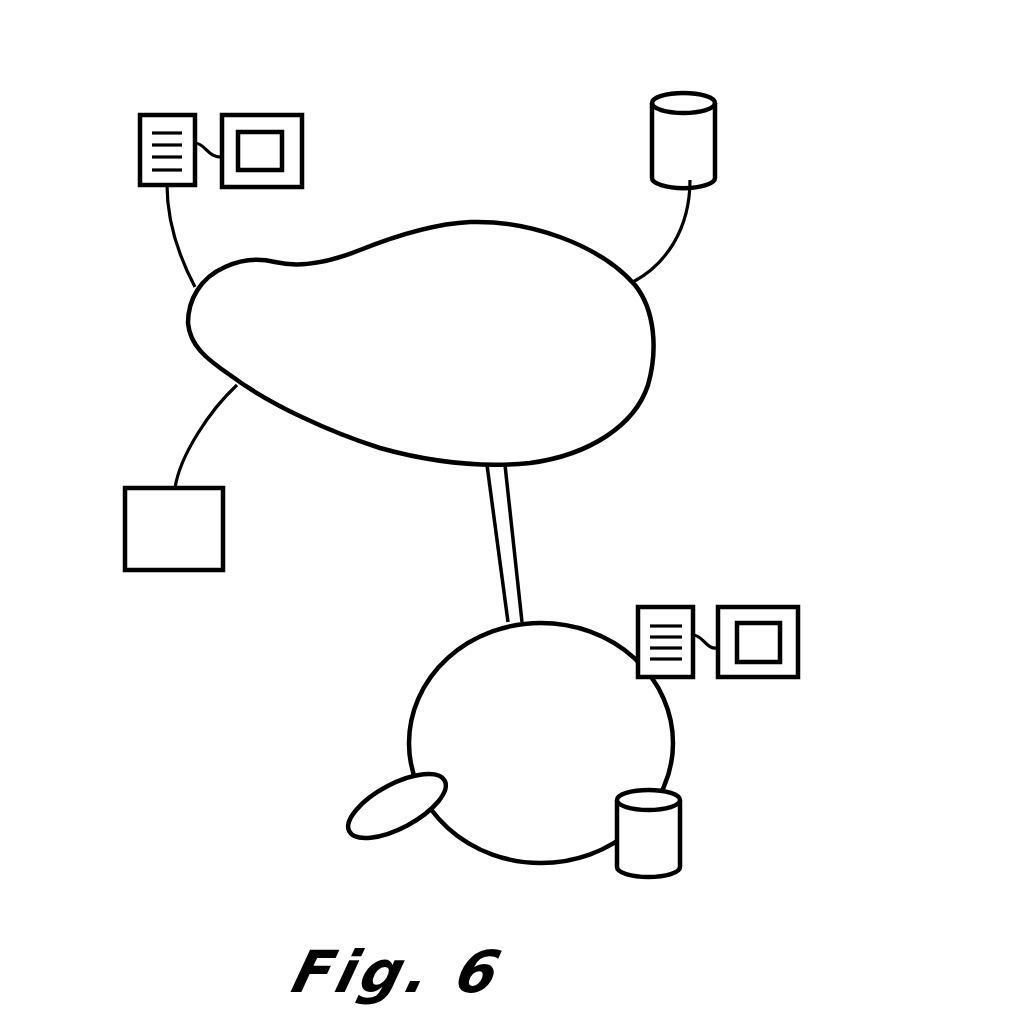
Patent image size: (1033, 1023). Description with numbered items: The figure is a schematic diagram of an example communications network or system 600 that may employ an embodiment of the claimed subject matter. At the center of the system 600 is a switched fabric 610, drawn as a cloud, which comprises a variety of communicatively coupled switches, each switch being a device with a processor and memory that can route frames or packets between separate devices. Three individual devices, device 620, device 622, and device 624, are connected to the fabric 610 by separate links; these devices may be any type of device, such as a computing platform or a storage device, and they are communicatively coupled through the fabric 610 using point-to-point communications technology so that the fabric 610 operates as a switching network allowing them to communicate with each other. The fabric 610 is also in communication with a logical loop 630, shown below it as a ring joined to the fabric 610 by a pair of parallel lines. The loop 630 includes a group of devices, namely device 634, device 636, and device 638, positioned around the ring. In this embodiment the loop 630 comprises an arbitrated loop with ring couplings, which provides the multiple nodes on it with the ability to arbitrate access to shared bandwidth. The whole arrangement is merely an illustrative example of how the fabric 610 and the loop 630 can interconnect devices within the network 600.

The communications network 600 is at (149, 798).
The switched fabric 610 is at (418, 392).
The device 620 is at (158, 115).
The device 622 is at (125, 505).
The device 624 is at (715, 133).
The logical loop 630 is at (443, 657).
The device 634 is at (375, 785).
The device 636 is at (680, 818).
The device 638 is at (673, 607).